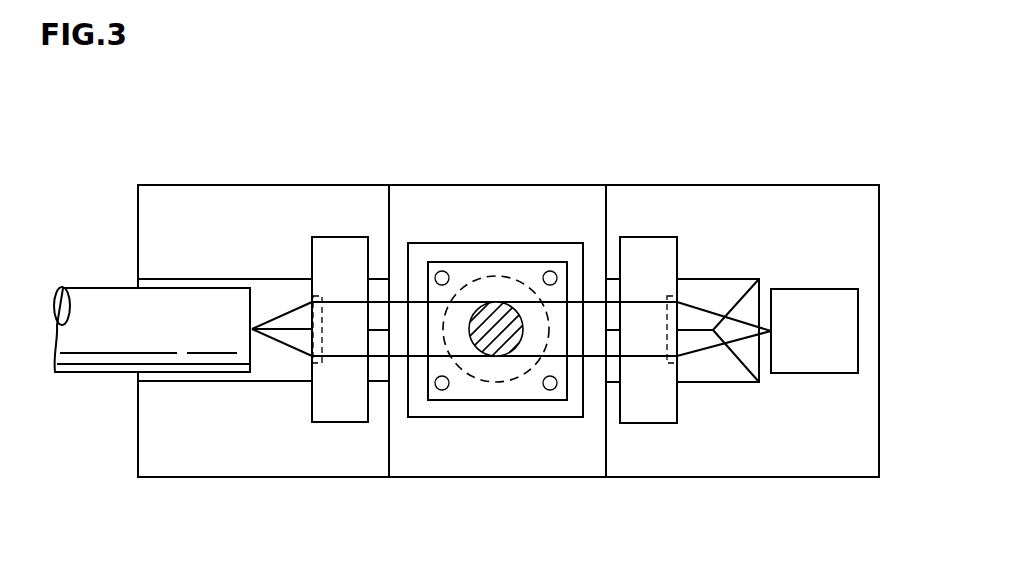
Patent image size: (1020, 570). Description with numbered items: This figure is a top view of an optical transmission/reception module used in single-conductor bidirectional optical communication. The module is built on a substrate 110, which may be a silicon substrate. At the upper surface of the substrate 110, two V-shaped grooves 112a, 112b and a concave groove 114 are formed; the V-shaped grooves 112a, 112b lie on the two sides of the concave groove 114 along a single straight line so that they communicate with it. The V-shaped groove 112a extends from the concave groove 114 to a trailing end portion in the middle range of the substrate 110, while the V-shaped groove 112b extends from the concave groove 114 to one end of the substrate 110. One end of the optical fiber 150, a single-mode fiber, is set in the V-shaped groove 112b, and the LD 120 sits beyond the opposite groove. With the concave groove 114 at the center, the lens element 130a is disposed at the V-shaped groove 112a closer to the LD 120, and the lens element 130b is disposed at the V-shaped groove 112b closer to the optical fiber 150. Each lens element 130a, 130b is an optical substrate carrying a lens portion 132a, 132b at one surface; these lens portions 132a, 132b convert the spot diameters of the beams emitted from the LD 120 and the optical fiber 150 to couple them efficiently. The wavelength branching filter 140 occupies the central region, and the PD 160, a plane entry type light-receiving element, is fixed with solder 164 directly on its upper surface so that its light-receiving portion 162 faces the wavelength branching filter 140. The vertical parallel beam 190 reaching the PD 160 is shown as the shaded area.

The substrate 110 is at (800, 478).
The V-shaped groove 112a is at (713, 367).
The V-shaped groove 112b is at (280, 367).
The concave groove 114 is at (477, 450).
The LD 120 is at (817, 373).
The lens element 130a is at (648, 237).
The lens element 130b is at (342, 237).
The lens portion 132a is at (697, 302).
The lens portion 132b is at (313, 300).
The wavelength branching filter 140 is at (420, 243).
The optical fiber 150 is at (90, 288).
The PD 160 is at (495, 262).
The light-receiving portion 162 is at (515, 277).
The solder 164 is at (550, 271).
The vertical parallel beam 190 is at (487, 316).